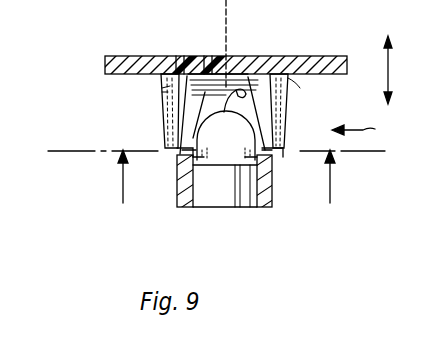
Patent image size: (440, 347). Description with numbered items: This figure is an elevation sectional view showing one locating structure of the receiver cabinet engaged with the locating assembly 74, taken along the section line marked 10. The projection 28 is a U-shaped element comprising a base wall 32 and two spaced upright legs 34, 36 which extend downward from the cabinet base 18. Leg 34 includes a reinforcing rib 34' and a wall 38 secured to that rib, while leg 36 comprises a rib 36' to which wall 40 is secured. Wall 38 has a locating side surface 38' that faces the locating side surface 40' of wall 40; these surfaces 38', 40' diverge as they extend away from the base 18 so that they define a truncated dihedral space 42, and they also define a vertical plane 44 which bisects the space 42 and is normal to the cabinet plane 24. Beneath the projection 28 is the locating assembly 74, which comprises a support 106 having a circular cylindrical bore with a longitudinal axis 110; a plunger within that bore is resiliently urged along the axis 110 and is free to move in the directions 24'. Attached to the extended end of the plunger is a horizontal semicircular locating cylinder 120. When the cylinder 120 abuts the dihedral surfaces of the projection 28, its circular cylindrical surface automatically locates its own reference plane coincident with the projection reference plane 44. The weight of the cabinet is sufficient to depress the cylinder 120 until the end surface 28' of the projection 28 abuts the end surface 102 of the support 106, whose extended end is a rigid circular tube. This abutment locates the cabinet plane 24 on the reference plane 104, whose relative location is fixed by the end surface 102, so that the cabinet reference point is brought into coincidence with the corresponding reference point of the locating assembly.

The section line 10 is at (216, 191).
The base 18 is at (105, 66).
The cabinet plane 24 is at (371, 174).
The directions 24' is at (408, 70).
The projection 28 is at (368, 128).
The end surface of projection 28' is at (233, 168).
The base wall 32 is at (239, 56).
The leg 34 is at (305, 111).
The reinforcing rib 34' is at (317, 91).
The leg 36 is at (154, 111).
The rib 36' is at (148, 89).
The wall 38 is at (260, 56).
The locating side surface 38' is at (248, 58).
The wall 40 is at (181, 48).
The locating side surface 40' is at (213, 48).
The truncated dihedral space 42 is at (246, 95).
The vertical plane 44 is at (228, 16).
The locating assembly 74 is at (272, 212).
The end surface 102 is at (226, 135).
The plane 104 is at (80, 152).
The support 106 is at (186, 210).
The longitudinal axis 110 is at (238, 210).
The locating cylinder 120 is at (225, 177).